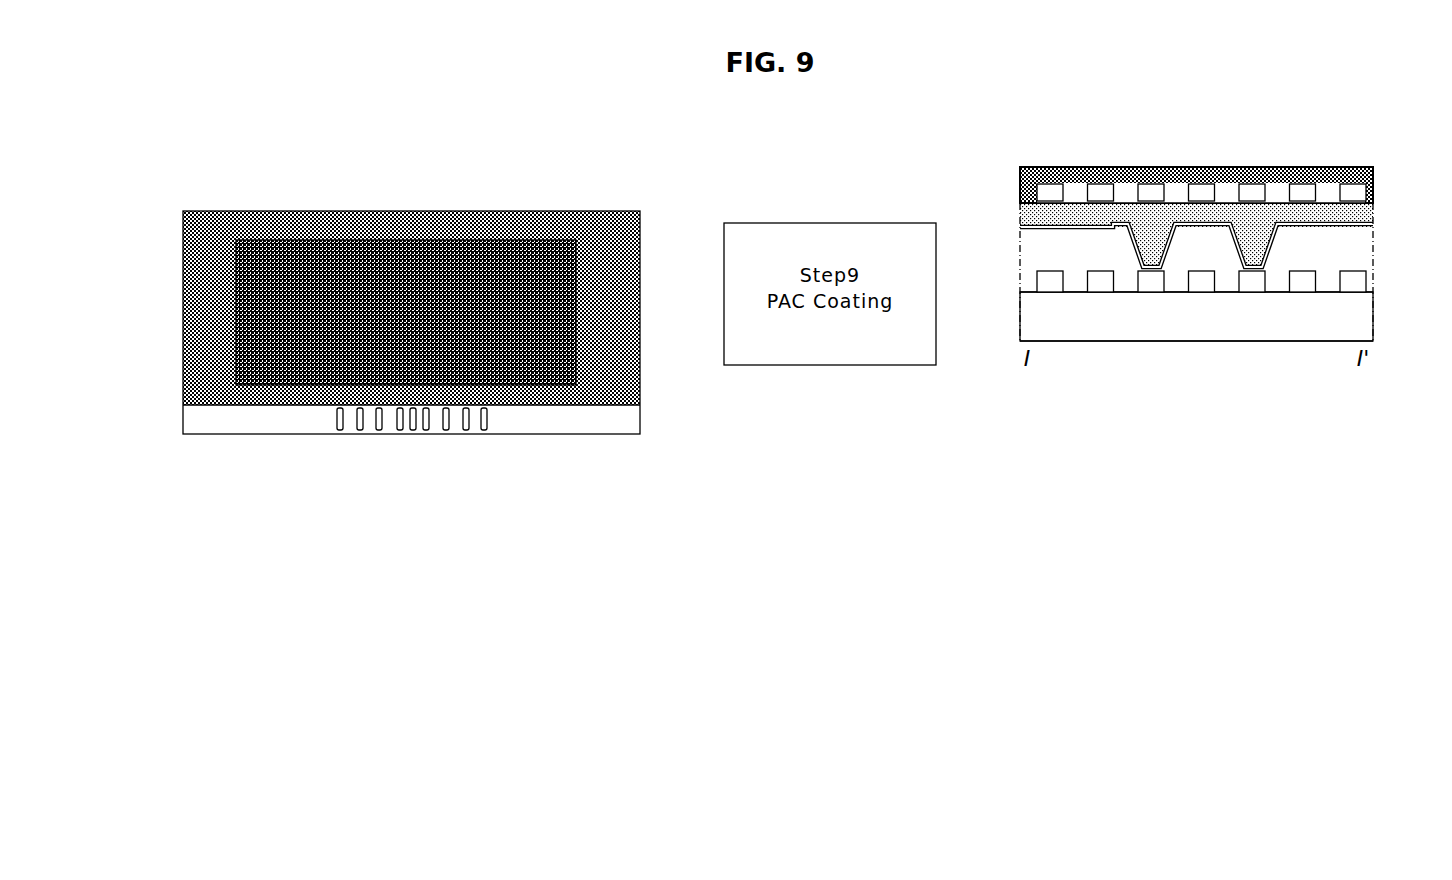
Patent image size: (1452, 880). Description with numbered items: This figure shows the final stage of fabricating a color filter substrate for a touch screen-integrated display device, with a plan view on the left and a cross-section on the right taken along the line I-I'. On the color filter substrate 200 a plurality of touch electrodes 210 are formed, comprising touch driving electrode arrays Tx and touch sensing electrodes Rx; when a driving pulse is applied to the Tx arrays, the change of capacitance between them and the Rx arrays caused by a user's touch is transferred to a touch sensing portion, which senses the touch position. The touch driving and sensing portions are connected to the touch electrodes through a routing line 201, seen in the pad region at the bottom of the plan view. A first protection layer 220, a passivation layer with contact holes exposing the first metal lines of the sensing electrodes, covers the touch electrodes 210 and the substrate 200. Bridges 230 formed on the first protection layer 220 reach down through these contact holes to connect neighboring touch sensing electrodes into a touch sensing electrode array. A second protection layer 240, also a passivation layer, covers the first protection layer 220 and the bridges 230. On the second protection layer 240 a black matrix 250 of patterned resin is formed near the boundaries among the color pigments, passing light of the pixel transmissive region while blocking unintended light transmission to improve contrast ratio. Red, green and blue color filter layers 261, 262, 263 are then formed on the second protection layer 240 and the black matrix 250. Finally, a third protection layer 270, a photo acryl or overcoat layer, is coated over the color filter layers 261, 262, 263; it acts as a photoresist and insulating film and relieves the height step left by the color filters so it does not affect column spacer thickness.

The color filter substrate 200 is at (183, 242).
The routing line 201 is at (379, 431).
The touch electrodes 210 is at (1368, 280).
The first protection layer 220 is at (1366, 244).
The bridge 230 is at (1236, 265).
The second protection layer 240 is at (1366, 212).
The black matrix 250 is at (183, 300).
The red color filter layer 261 is at (190, 330).
The green color filter layer 262 is at (183, 385).
The blue color filter layer 263 is at (183, 355).
The third protection layer 270 is at (183, 277).